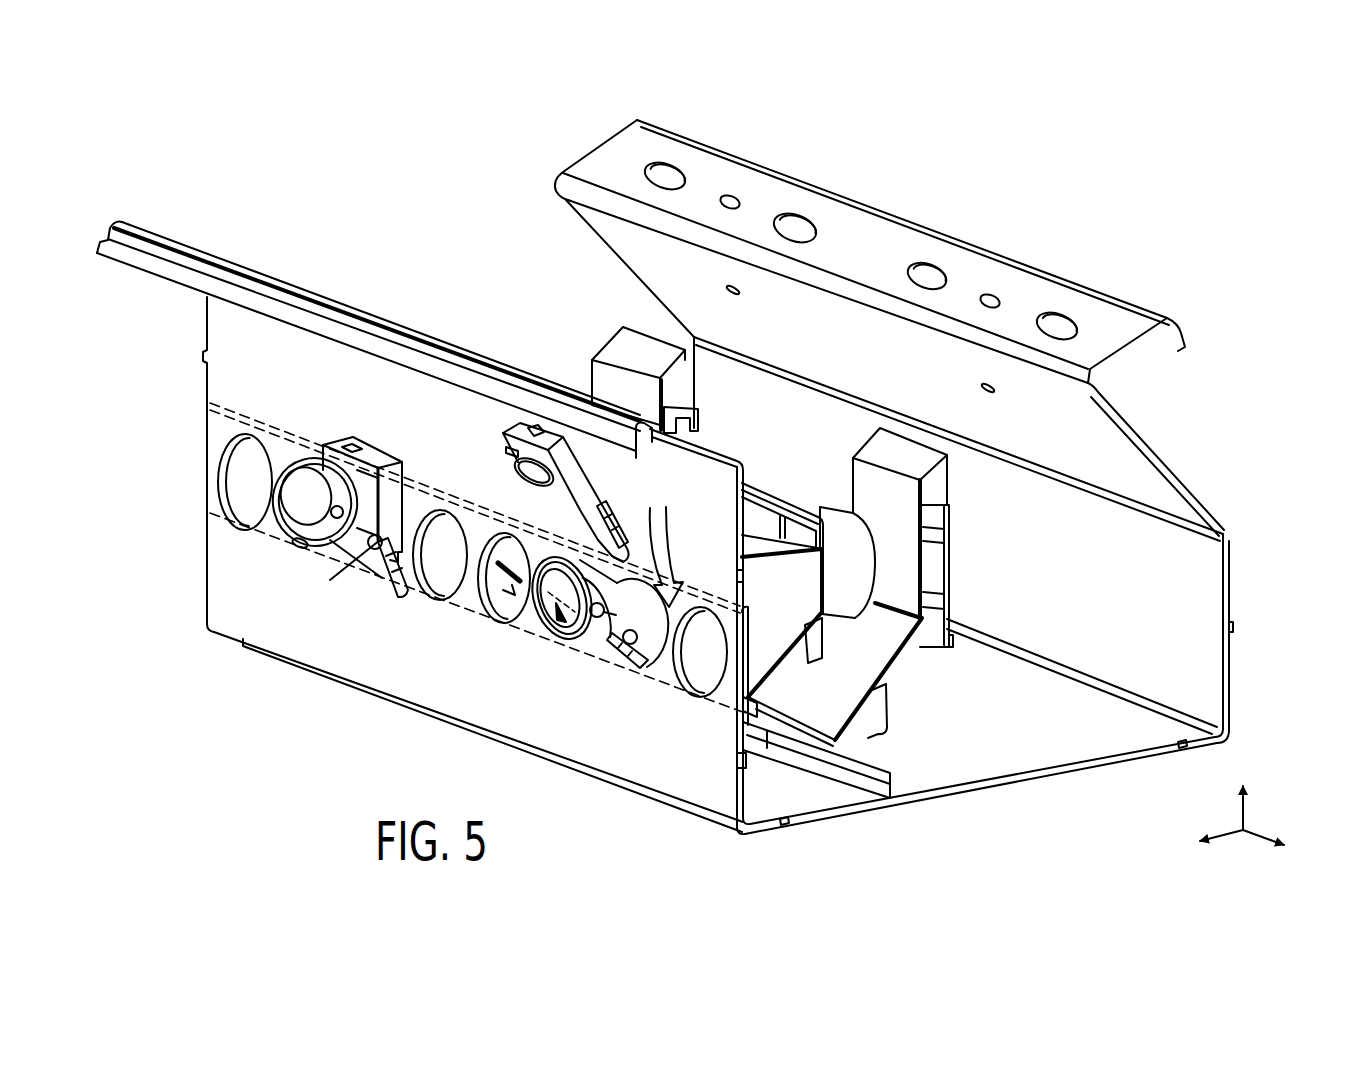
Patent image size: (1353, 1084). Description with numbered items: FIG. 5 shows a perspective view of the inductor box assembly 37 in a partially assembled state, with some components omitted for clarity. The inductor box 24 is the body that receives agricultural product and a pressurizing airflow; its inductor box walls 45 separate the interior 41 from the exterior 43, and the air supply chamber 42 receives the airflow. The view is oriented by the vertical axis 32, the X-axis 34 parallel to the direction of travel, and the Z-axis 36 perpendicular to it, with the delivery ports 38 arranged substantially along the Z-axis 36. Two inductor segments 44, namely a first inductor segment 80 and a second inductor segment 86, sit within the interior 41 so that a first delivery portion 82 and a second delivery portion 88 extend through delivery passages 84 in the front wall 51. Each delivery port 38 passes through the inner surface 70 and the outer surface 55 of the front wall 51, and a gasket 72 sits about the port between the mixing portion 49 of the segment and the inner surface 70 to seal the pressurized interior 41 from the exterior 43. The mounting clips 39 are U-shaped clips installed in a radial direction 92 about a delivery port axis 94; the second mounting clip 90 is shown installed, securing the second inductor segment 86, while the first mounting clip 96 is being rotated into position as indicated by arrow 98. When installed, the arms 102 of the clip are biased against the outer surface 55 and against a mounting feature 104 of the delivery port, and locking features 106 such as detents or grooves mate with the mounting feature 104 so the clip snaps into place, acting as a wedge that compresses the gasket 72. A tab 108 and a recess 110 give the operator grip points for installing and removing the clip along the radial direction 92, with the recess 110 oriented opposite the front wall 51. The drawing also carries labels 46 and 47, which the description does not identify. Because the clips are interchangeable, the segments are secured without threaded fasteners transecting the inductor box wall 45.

The inductor box 24 is at (889, 328).
The vertical axis 32 is at (1247, 812).
The X-axis 34 is at (1252, 838).
The Z-axis 36 is at (1230, 832).
The inductor box assembly 37 is at (858, 140).
The delivery port 38 is at (462, 555).
The mounting clip 39 is at (511, 439).
The interior 41 is at (876, 368).
The air supply chamber 42 is at (1206, 592).
The exterior 43 is at (174, 543).
The inductor segment 44 is at (972, 576).
The inductor box wall 45 is at (975, 673).
The support plate 46 is at (846, 598).
The block 47 is at (915, 545).
The mixing portion 49 is at (758, 490).
The front wall 51 is at (736, 797).
The outer surface 55 is at (738, 578).
The inner surface 70 is at (749, 585).
The gasket 72 is at (760, 699).
The first inductor segment 80 is at (912, 569).
The first delivery portion 82 is at (548, 640).
The delivery passage 84 is at (448, 599).
The second inductor segment 86 is at (601, 349).
The second delivery portion 88 is at (292, 462).
The second mounting clip 90 is at (398, 462).
The radial direction 92 is at (572, 622).
The delivery port axis 94 is at (687, 666).
The first mounting clip 96 is at (564, 439).
The arrow 98 is at (680, 532).
The arms 102 is at (379, 591).
The mounting feature 104 is at (352, 566).
The locking features 106 is at (528, 500).
The tab 108 is at (532, 430).
The recess 110 is at (508, 452).